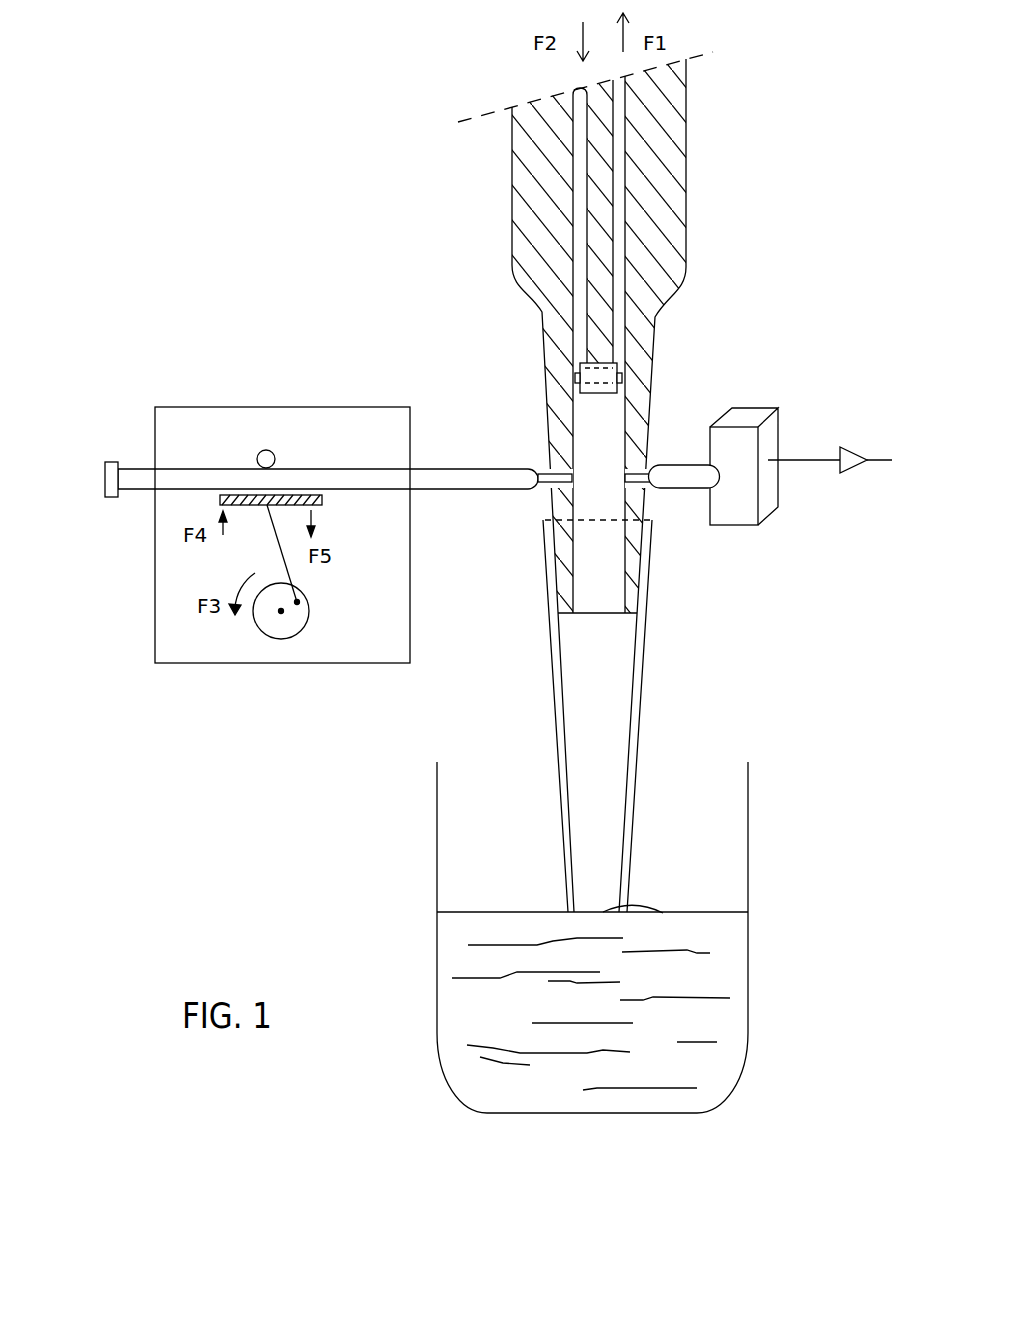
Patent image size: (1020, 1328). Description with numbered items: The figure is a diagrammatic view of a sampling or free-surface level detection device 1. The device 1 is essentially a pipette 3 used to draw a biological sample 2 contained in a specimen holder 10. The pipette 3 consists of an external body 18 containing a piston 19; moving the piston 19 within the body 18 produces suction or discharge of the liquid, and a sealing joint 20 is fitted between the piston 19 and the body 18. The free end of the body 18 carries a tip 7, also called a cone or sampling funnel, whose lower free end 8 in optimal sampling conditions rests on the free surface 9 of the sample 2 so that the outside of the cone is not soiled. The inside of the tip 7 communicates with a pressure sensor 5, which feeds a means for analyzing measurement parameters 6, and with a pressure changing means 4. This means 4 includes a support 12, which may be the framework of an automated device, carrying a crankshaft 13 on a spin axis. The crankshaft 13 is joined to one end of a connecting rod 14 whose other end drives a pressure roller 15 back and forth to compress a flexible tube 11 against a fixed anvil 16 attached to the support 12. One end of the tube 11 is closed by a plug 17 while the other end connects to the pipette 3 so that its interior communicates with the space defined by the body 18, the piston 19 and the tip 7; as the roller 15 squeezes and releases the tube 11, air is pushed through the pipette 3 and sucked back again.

The device 1 is at (685, 593).
The biological sample 2 is at (697, 1093).
The pipette 3 is at (698, 268).
The pressure changing means 4 is at (231, 677).
The pressure sensor 5 is at (727, 513).
The means for analyzing measurement parameters 6 is at (837, 451).
The tip 7 is at (640, 717).
The lower free end 8 is at (663, 913).
The free surface 9 is at (500, 910).
The specimen holder 10 is at (750, 852).
The flexible tube 11 is at (432, 468).
The support 12 is at (392, 600).
The crankshaft 13 is at (280, 627).
The connecting rod 14 is at (265, 537).
The pressure roller 15 is at (322, 498).
The anvil 16 is at (258, 453).
The plug 17 is at (107, 497).
The external body 18 is at (683, 143).
The piston 19 is at (603, 260).
The sealing joint 20 is at (620, 377).